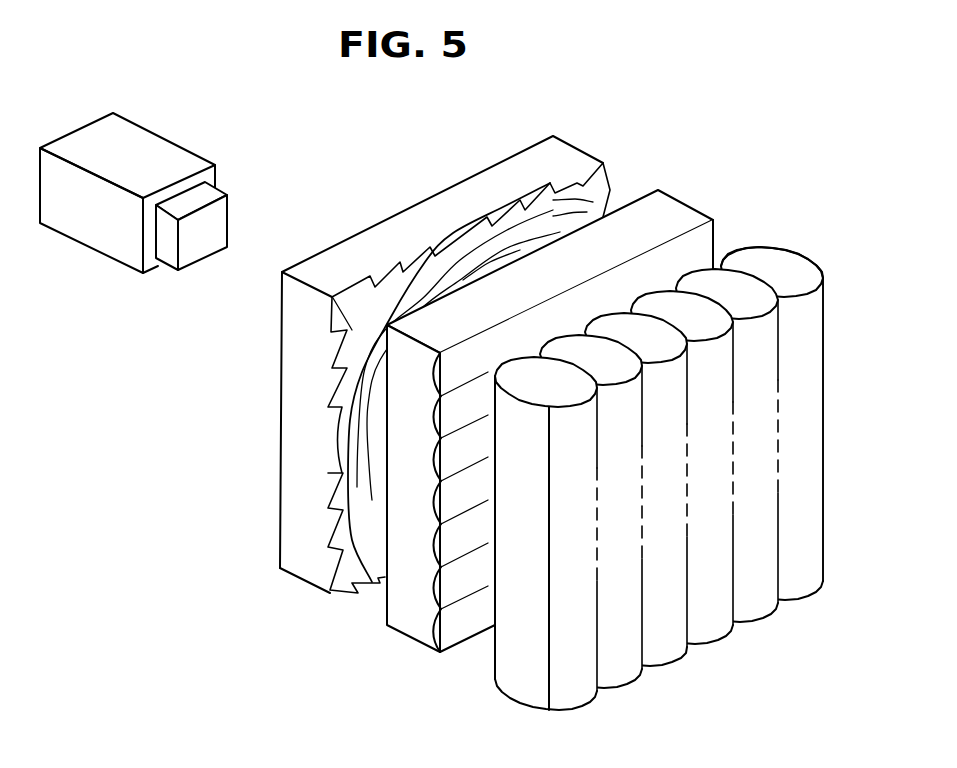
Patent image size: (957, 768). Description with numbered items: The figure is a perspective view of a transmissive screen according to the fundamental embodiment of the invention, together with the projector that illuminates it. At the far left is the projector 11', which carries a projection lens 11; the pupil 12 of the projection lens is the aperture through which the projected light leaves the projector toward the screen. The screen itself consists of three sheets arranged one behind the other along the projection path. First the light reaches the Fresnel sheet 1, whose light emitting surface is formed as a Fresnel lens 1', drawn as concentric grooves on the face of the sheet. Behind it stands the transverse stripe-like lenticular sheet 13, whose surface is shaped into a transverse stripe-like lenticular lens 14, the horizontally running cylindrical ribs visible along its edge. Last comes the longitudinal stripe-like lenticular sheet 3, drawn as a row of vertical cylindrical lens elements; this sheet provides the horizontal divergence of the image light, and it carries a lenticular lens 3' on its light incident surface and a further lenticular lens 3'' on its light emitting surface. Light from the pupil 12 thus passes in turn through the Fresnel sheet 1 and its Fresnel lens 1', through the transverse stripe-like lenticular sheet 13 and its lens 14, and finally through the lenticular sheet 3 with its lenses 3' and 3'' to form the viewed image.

The Fresnel sheet 1 is at (435, 383).
The Fresnel lens 1' is at (463, 408).
The longitudinal stripe-like lenticular sheet 3 is at (657, 501).
The lenticular lens 3' is at (772, 233).
The lenticular lens 3'' is at (843, 429).
The projection lens 11 is at (211, 192).
The projector 11' is at (129, 180).
The pupil of the projection lens 12 is at (203, 245).
The transverse stripe-like lenticular sheet 13 is at (407, 638).
The transverse stripe-like lenticular lens 14 is at (455, 643).